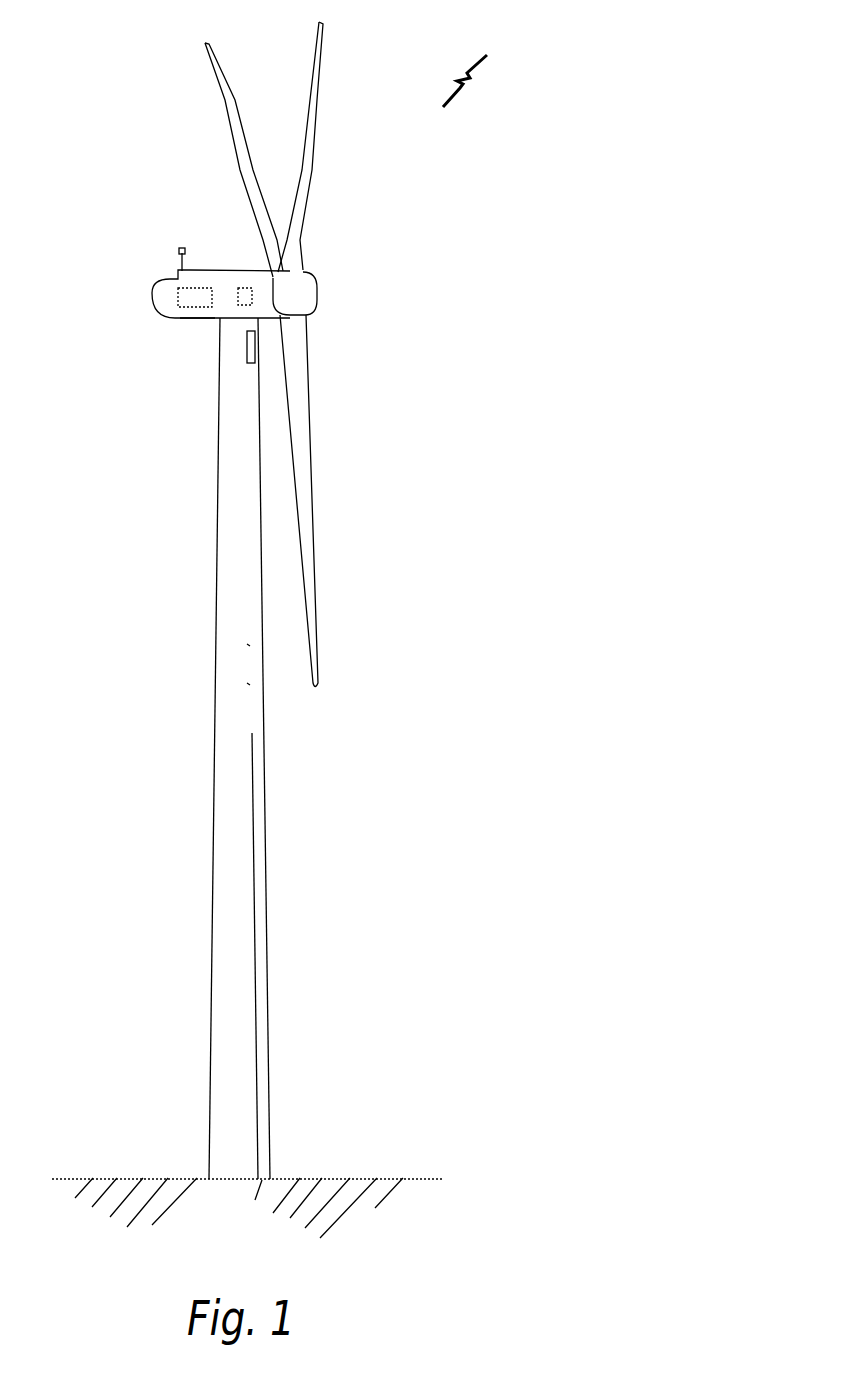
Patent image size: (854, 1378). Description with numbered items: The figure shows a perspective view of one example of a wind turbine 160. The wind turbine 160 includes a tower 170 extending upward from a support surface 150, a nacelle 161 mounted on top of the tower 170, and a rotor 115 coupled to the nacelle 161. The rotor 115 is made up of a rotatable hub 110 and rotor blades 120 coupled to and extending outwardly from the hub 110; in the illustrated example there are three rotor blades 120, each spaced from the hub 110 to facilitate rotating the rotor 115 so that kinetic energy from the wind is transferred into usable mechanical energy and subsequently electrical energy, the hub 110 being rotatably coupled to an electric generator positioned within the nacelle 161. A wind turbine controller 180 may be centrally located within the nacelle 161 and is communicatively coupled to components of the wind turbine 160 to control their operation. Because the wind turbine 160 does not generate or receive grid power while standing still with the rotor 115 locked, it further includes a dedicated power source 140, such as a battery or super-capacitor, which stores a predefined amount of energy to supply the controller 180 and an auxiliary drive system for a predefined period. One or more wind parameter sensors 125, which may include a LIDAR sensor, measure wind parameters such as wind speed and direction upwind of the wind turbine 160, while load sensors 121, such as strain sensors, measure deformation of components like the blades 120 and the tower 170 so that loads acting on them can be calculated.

The hub 110 is at (318, 302).
The rotor 115 is at (322, 270).
The rotor blade 120 is at (312, 67).
The load sensor 121 is at (245, 352).
The wind parameter sensor 125 is at (182, 253).
The dedicated power source 140 is at (247, 300).
The support surface 150 is at (135, 1177).
The wind turbine 160 is at (502, 70).
The nacelle 161 is at (195, 322).
The tower 170 is at (225, 867).
The wind turbine controller 180 is at (193, 303).